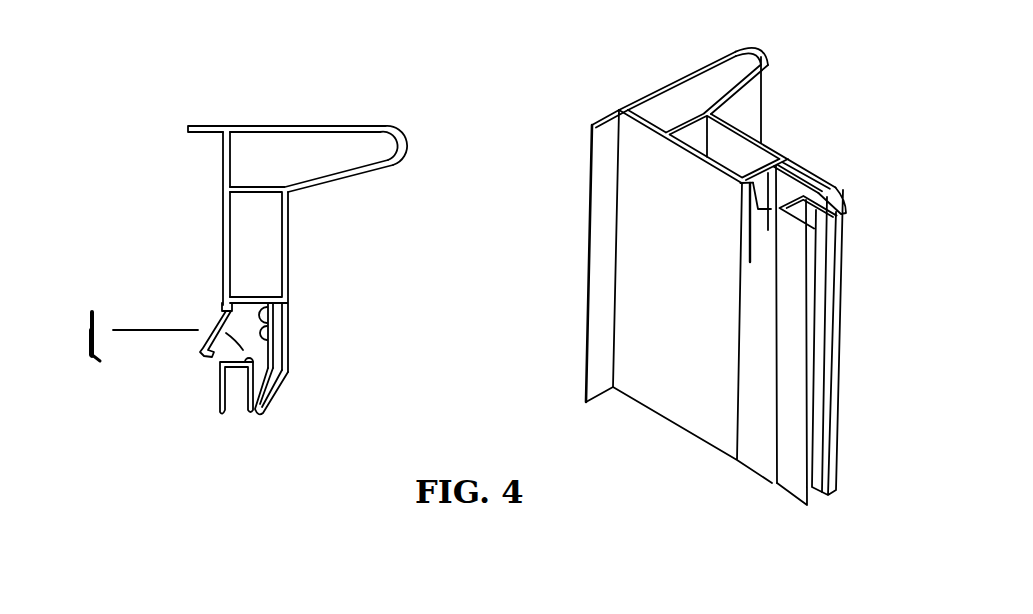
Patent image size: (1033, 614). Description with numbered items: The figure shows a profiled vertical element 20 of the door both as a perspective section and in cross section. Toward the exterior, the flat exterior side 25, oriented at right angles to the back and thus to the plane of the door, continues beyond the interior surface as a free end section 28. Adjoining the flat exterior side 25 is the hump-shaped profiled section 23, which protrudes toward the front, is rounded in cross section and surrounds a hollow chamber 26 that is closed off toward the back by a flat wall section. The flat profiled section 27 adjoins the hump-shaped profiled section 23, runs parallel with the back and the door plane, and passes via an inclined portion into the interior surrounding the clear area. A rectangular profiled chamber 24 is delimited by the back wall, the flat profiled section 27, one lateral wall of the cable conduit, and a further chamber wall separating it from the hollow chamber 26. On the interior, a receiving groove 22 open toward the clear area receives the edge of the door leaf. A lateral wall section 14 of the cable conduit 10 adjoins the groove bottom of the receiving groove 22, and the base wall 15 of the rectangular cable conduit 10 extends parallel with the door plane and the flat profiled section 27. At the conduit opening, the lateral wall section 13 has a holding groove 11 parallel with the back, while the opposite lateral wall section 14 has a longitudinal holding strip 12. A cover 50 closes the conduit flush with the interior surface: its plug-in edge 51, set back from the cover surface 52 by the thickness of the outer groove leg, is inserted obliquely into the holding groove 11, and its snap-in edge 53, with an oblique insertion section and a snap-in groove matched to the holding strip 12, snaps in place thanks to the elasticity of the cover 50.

The cable conduit 10 is at (253, 340).
The holding groove 11 is at (220, 302).
The holding strip 12 is at (227, 360).
The lateral wall section 13 is at (257, 320).
The lateral wall section 14 is at (275, 392).
The base wall 15 is at (270, 340).
The profiled vertical element 20 is at (317, 273).
The receiving groove 22 is at (237, 398).
The hump-shaped profiled section 23 is at (358, 180).
The rectangular profiled chamber 24 is at (265, 218).
The flat exterior side 25 is at (317, 125).
The hollow chamber 26 is at (258, 145).
The flat profiled section 27 is at (288, 255).
The free end section 28 is at (188, 126).
The cover 50 is at (98, 327).
The plug-in edge 51 is at (92, 312).
The cover surface 52 is at (90, 330).
The snap-in edge 53 is at (102, 357).